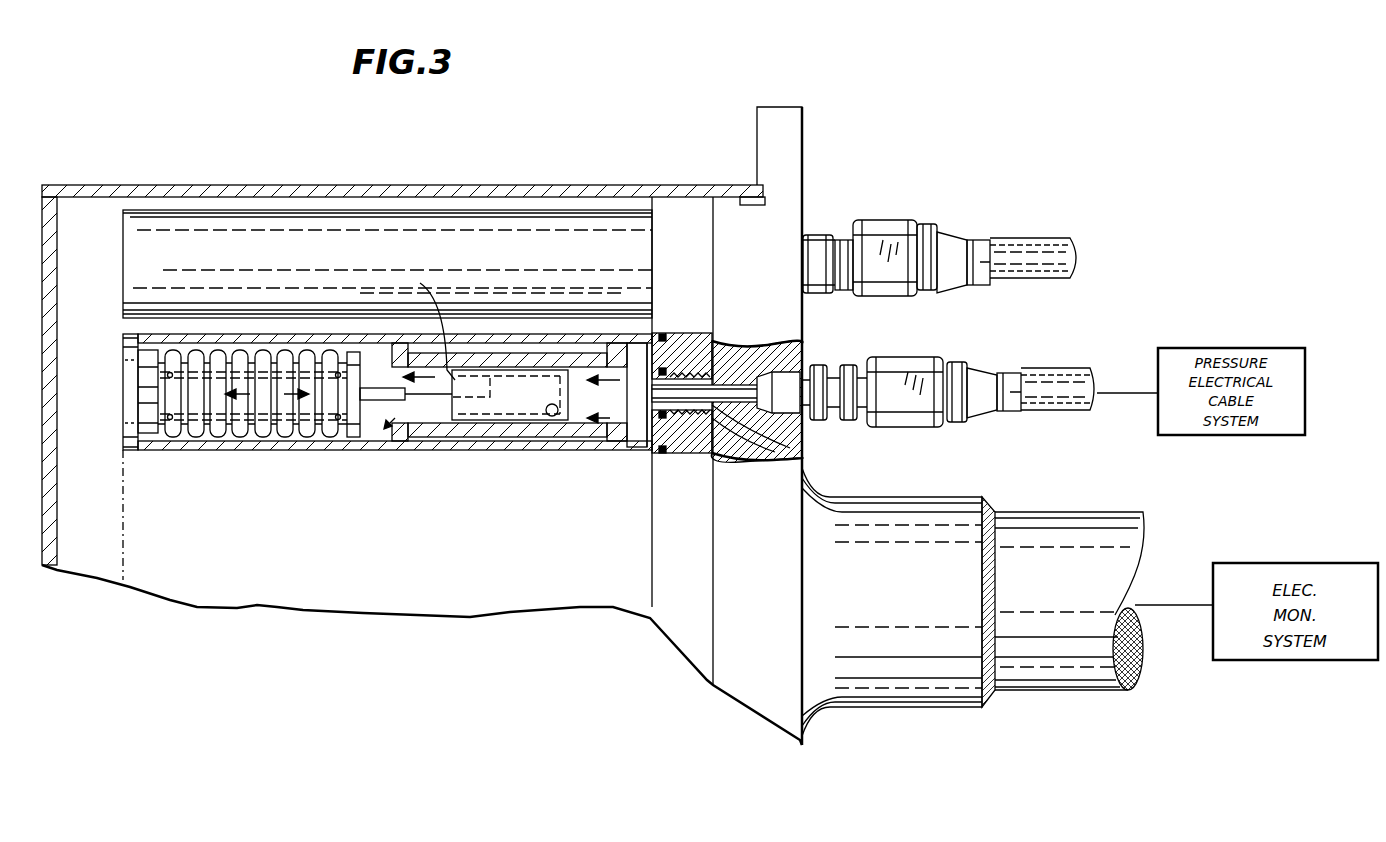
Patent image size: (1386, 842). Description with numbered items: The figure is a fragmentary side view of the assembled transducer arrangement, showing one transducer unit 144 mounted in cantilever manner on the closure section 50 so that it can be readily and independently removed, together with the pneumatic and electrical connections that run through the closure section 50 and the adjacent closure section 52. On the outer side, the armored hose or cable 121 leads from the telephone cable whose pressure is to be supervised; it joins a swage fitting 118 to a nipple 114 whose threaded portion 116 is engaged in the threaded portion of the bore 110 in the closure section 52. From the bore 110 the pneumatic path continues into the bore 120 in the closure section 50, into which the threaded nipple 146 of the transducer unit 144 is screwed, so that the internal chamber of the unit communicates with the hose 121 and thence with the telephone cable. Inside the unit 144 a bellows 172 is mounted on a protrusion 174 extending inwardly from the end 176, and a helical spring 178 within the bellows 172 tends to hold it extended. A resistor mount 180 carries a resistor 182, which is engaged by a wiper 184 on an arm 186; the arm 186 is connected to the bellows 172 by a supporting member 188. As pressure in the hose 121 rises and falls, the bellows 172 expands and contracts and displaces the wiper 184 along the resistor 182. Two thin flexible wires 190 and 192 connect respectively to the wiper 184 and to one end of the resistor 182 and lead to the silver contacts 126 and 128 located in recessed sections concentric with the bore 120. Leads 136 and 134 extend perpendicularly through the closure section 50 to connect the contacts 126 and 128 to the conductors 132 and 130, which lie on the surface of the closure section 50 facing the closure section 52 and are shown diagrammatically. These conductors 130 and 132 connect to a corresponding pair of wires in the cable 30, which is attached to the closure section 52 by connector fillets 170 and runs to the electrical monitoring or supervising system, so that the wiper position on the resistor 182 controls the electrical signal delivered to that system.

The cable 30 is at (1092, 498).
The closure section 50 is at (676, 218).
The closure section 52 is at (803, 176).
The bore 110 is at (737, 380).
The nipple 114 is at (873, 357).
The threaded portion 116 is at (803, 360).
The swage fitting 118 is at (912, 421).
The bore 120 is at (803, 437).
The armored hose or cable 121 is at (1067, 382).
The contact 126 is at (680, 313).
The contact 128 is at (672, 428).
The conductor 130 is at (713, 378).
The conductor 132 is at (690, 430).
The lead 134 is at (703, 420).
The lead 136 is at (683, 345).
The transducer unit 144 is at (284, 444).
The threaded nipple 146 is at (713, 430).
The connector fillet 170 is at (807, 490).
The bellows 172 is at (240, 355).
The protrusion 174 is at (128, 385).
The end 176 is at (130, 426).
The spring 178 is at (185, 405).
The resistor mount 180 is at (416, 326).
The resistor 182 is at (518, 383).
The wiper 184 is at (477, 380).
The arm 186 is at (433, 393).
The supporting member 188 is at (381, 410).
The wire 190 is at (495, 412).
The wire 192 is at (650, 372).